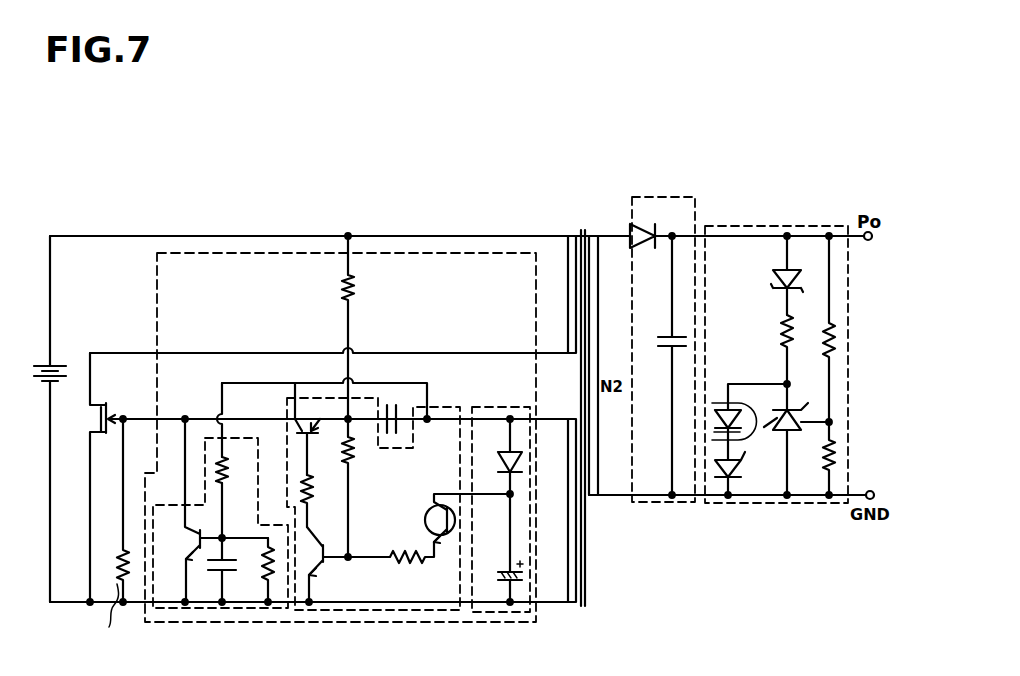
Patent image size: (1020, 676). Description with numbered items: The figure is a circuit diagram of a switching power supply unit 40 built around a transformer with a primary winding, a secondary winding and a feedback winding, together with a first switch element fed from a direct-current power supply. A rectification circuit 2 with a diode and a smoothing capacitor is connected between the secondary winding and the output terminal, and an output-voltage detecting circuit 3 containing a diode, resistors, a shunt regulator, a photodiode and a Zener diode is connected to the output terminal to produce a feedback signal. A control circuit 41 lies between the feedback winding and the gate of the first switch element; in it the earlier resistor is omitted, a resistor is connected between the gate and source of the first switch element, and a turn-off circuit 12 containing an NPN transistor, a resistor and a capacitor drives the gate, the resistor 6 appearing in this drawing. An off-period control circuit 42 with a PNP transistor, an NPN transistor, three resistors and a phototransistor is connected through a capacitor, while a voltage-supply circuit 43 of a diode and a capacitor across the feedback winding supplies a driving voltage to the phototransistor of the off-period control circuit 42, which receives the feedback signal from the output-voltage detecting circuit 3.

The rectification circuit 2 is at (660, 197).
The output-voltage detecting circuit 3 is at (760, 226).
The off-period control circuit 6 is at (227, 478).
The turn-off circuit 12 is at (240, 437).
The switching power supply unit 40 is at (295, 181).
The control circuit 41 is at (224, 253).
The off-period control circuit 42 is at (300, 398).
The voltage-supply circuit 43 is at (510, 407).